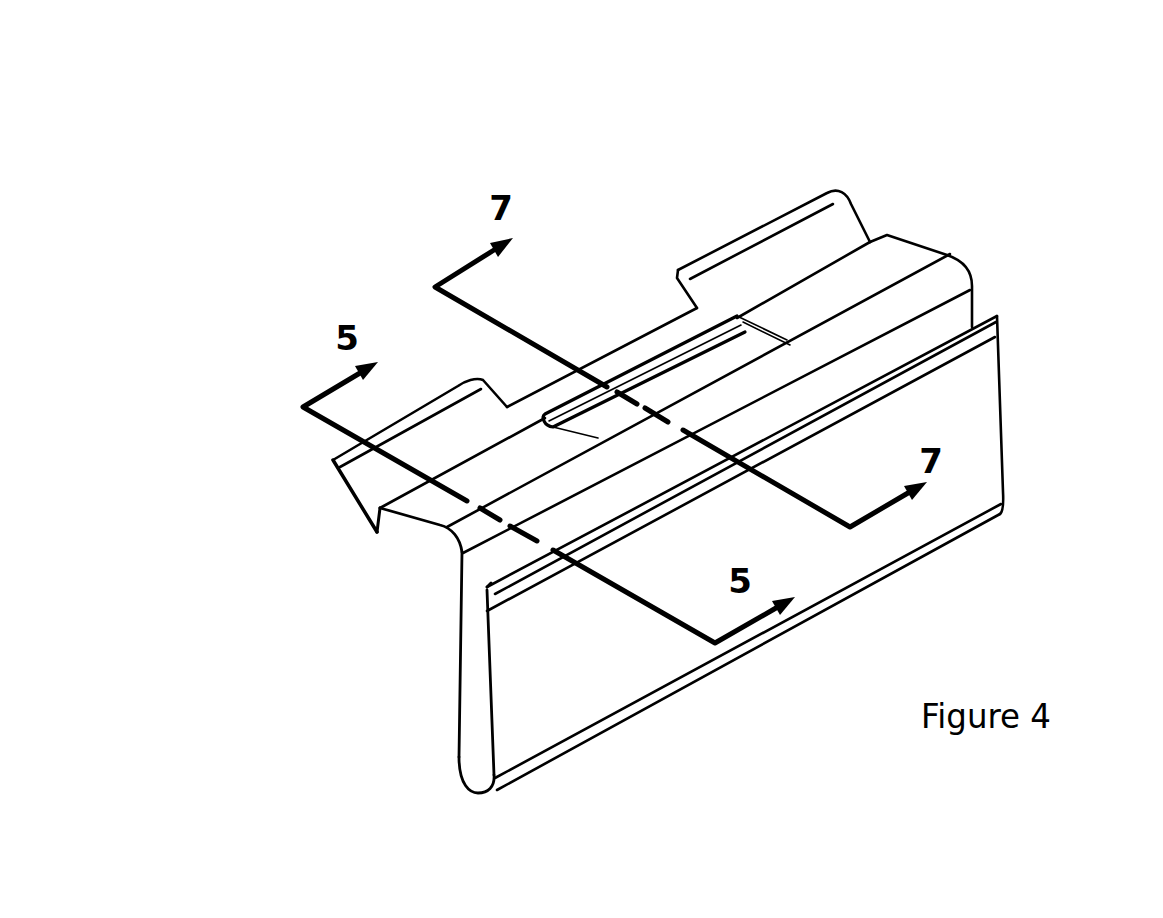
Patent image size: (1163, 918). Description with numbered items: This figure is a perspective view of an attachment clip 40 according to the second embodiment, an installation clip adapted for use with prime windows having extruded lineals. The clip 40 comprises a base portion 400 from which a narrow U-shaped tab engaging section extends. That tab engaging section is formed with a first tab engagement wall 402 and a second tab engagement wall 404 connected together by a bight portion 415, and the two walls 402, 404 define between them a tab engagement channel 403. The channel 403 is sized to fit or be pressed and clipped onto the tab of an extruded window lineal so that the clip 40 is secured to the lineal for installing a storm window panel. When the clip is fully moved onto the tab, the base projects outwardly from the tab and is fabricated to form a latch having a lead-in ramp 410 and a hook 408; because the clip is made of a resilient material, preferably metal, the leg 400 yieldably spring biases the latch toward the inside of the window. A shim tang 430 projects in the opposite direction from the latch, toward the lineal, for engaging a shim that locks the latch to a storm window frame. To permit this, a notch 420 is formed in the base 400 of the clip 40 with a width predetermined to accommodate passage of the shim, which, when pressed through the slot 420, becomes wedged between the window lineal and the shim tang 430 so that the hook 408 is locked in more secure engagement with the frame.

The clip 40 is at (991, 196).
The base portion 400 is at (410, 527).
The first tab engagement wall 402 is at (450, 707).
The tab engagement channel 403 is at (472, 725).
The second tab engagement wall 404 is at (528, 723).
The hook 408 is at (370, 527).
The lead-in ramp 410 is at (343, 498).
The bight portion 415 is at (477, 795).
The notch 420 is at (585, 336).
The shim tang 430 is at (680, 356).